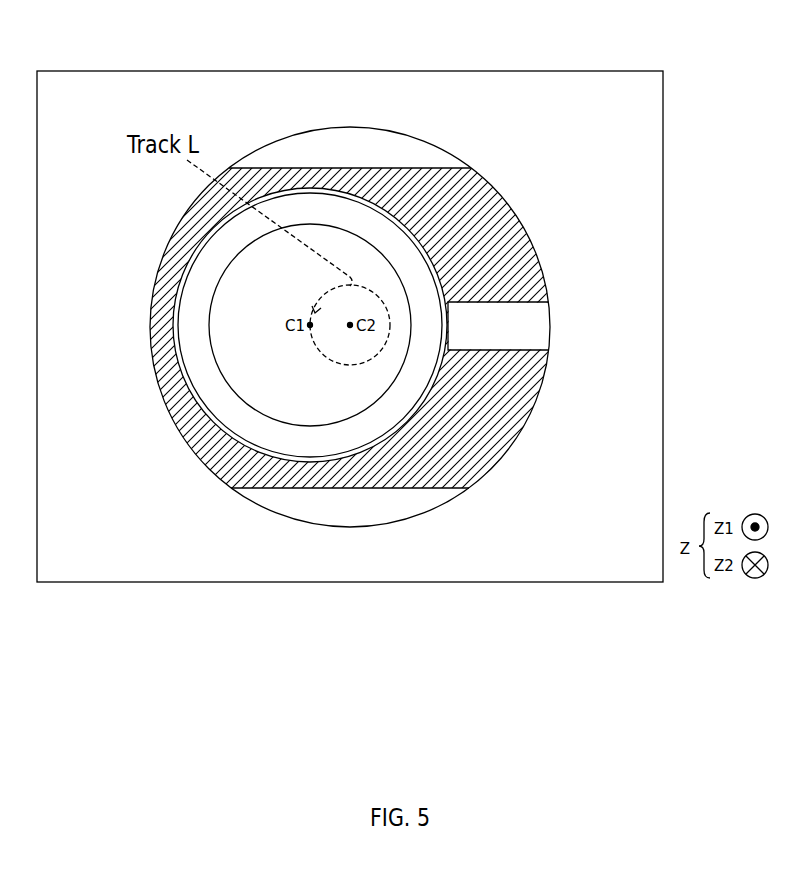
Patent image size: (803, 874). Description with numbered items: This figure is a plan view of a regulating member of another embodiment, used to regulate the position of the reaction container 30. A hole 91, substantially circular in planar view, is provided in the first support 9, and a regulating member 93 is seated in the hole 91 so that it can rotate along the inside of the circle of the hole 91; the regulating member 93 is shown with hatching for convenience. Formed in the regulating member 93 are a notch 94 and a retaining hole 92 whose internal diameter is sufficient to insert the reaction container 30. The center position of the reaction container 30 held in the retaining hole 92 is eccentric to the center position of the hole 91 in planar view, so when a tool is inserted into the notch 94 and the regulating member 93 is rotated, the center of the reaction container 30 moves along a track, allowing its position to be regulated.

The first support 9 is at (373, 50).
The hole 91 is at (426, 144).
The retaining hole 92 is at (360, 446).
The regulating member 93 is at (521, 231).
The notch 94 is at (520, 320).
The reaction container 30 is at (203, 256).